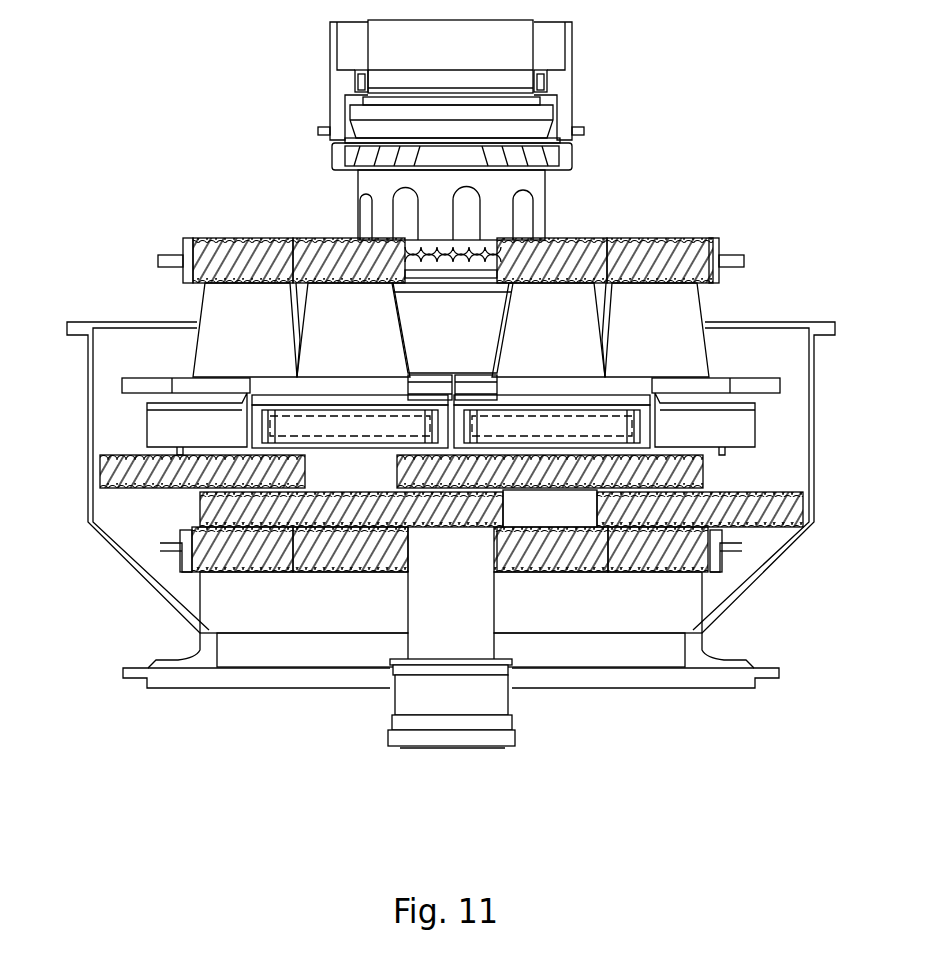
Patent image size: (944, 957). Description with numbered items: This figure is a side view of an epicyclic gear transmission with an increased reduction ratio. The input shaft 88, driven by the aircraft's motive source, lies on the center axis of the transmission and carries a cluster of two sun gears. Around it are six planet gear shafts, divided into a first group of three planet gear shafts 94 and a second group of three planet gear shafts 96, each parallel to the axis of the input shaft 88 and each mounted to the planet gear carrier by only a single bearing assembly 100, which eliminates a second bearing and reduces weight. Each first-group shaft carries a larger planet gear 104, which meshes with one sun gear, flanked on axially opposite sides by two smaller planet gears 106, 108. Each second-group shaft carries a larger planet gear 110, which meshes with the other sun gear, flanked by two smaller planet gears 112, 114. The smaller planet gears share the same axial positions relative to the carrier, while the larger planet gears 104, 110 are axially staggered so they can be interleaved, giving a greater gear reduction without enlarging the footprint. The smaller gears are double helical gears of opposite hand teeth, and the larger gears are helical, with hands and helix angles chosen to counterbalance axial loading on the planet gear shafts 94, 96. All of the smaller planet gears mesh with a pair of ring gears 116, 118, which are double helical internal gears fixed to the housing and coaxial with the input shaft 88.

The input shaft 88 is at (433, 637).
The planet gear shaft 94 is at (697, 360).
The planet gear shaft 96 is at (223, 345).
The bearing assembly 100 is at (293, 425).
The larger planet gear 104 is at (300, 513).
The smaller planet gear 106 is at (375, 565).
The smaller planet gear 108 is at (323, 237).
The larger planet gear 110 is at (107, 477).
The smaller planet gear 112 is at (213, 563).
The smaller planet gear 114 is at (225, 252).
The ring gear 116 is at (192, 547).
The ring gear 118 is at (192, 253).